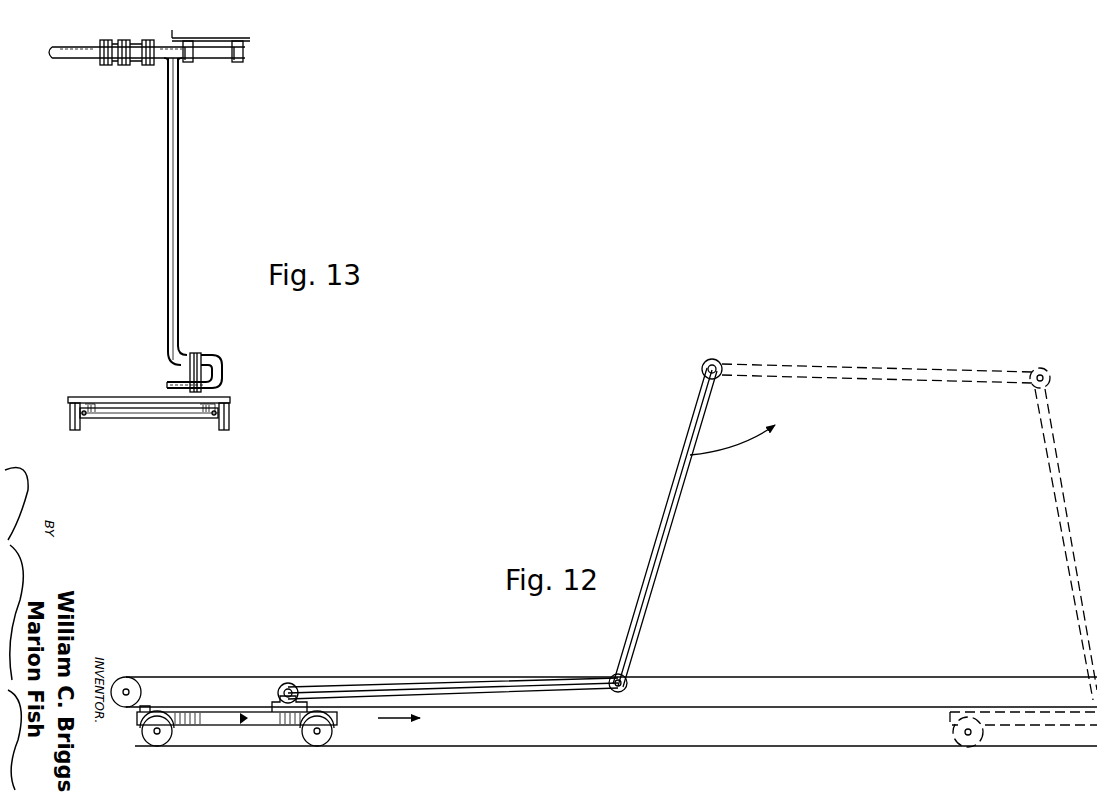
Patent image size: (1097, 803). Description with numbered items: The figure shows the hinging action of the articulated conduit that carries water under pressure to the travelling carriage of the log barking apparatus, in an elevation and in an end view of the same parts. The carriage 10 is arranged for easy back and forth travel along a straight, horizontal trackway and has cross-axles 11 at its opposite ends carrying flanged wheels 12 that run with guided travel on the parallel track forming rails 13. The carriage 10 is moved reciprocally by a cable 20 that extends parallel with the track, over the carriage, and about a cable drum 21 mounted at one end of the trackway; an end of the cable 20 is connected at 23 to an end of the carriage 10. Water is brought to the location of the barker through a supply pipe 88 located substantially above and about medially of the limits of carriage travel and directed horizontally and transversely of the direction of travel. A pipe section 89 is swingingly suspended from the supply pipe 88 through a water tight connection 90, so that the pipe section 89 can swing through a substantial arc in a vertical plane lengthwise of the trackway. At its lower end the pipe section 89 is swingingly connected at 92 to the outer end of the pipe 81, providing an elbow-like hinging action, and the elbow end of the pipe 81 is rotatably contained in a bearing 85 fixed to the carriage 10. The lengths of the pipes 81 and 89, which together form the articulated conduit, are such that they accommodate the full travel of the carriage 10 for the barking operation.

In FIG. 13, the carriage 10 is at (100, 393).
In FIG. 12, the carriage 10 is at (243, 726).
In FIG. 13, the cross-axles 11 is at (128, 420).
In FIG. 12, the cross-axles 11 is at (160, 745).
In FIG. 13, the wheels 12 is at (70, 414).
In FIG. 12, the wheels 12 is at (318, 746).
In FIG. 12, the track forming rails 13 is at (447, 748).
In FIG. 12, the cable 20 is at (270, 677).
In FIG. 12, the cable drum 21 is at (128, 686).
In FIG. 12, the cable connection 23 is at (146, 706).
In FIG. 13, the pipe 81 is at (224, 374).
In FIG. 12, the pipe 81 is at (458, 686).
In FIG. 12, the bearing 85 is at (296, 686).
In FIG. 13, the supply pipe 88 is at (55, 62).
In FIG. 12, the supply pipe 88 is at (722, 366).
In FIG. 13, the pipe section 89 is at (180, 192).
In FIG. 12, the pipe section 89 is at (688, 505).
In FIG. 13, the water tight connection 90 is at (145, 66).
In FIG. 13, the swinging connection 92 is at (199, 357).
In FIG. 12, the swinging connection 92 is at (610, 680).